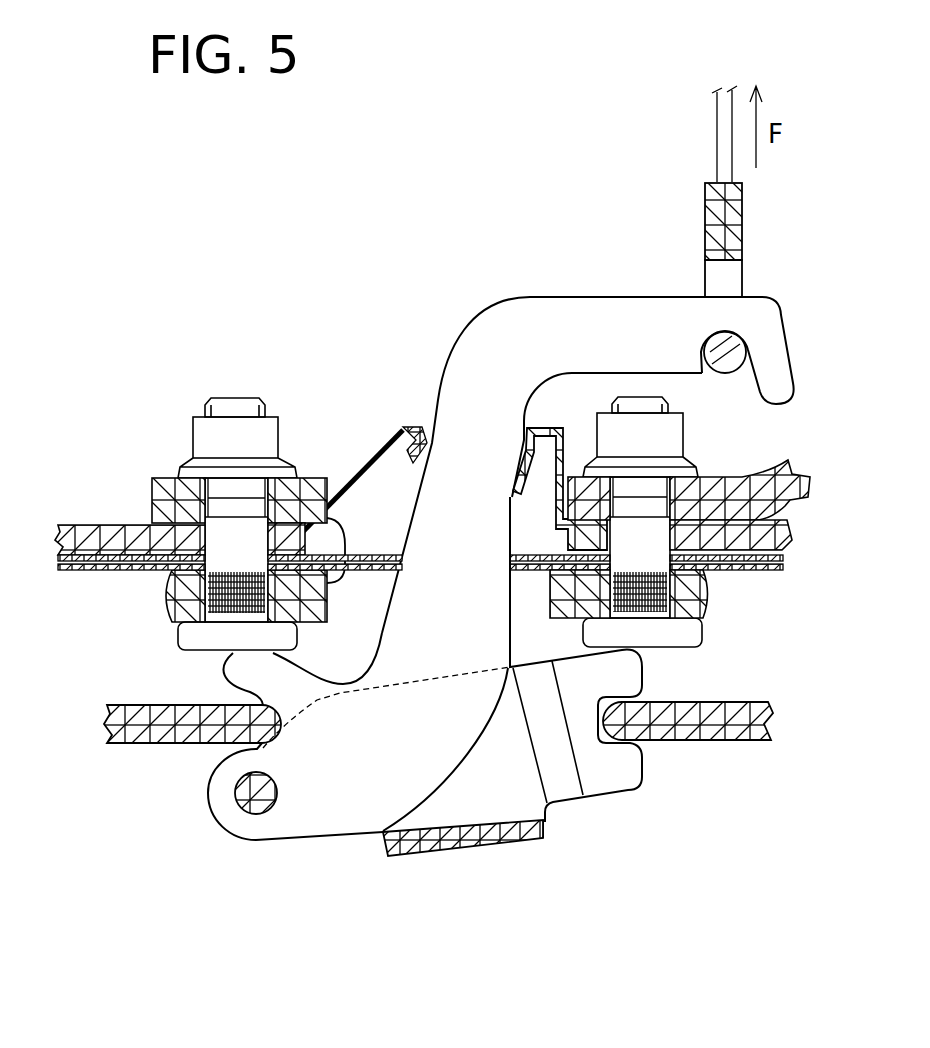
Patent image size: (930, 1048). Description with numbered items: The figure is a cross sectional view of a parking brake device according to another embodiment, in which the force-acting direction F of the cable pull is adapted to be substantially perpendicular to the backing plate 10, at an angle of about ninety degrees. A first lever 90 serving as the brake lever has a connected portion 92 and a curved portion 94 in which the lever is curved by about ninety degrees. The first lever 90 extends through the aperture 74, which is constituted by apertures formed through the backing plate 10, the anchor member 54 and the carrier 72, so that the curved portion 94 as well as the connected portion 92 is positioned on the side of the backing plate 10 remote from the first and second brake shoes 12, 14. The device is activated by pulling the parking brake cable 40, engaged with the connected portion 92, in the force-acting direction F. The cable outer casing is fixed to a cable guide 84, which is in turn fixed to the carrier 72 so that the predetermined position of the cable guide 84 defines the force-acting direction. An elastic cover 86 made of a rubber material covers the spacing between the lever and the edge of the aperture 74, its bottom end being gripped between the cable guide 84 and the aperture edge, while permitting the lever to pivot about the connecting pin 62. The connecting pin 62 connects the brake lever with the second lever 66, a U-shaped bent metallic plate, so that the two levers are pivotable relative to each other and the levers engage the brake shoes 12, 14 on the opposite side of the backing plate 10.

The backing plate 10 is at (98, 572).
The first brake shoe 12 is at (165, 730).
The second brake shoe 14 is at (690, 735).
The parking brake cable 40 is at (720, 133).
The anchor member 54 is at (707, 593).
The connecting pin 62 is at (263, 803).
The second lever 66 is at (503, 807).
The carrier 72 is at (112, 532).
The aperture 74 is at (335, 585).
The cable guide 84 is at (790, 502).
The cover 86 is at (378, 432).
The first lever 90 is at (345, 813).
The connected portion 92 is at (766, 320).
The curved portion 94 is at (496, 352).